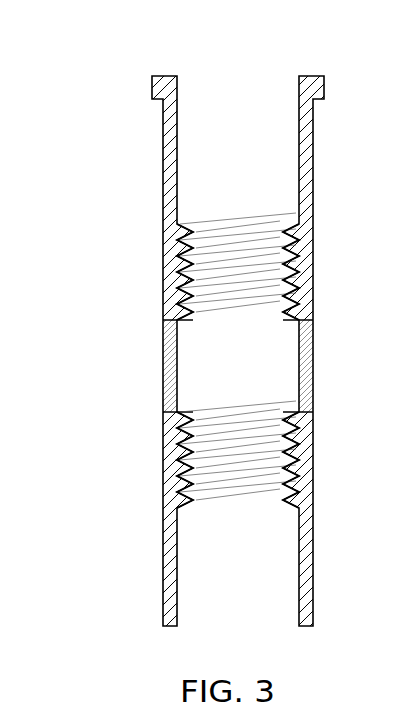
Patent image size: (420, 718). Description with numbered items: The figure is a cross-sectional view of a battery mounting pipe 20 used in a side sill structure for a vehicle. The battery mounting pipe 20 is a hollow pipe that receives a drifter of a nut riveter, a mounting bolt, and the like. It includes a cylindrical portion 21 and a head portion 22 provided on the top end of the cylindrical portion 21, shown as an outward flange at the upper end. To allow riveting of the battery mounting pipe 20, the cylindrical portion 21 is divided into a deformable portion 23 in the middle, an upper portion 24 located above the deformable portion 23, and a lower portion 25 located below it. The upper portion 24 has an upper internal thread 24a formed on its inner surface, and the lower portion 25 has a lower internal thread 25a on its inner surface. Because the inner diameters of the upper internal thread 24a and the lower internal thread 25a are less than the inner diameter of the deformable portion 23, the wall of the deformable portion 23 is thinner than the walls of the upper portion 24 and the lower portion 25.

The battery mounting pipe 20 is at (46, 38).
The cylindrical portion 21 is at (148, 180).
The head portion 22 is at (152, 84).
The deformable portion 23 is at (79, 320).
The upper portion 24 is at (163, 224).
The upper internal thread 24a is at (303, 220).
The lower portion 25 is at (163, 412).
The lower internal thread 25a is at (303, 502).